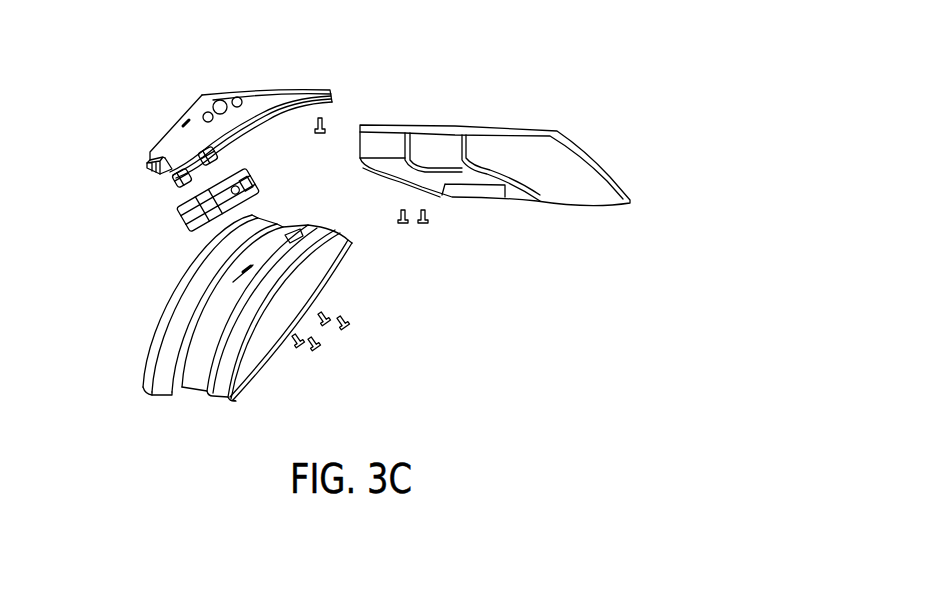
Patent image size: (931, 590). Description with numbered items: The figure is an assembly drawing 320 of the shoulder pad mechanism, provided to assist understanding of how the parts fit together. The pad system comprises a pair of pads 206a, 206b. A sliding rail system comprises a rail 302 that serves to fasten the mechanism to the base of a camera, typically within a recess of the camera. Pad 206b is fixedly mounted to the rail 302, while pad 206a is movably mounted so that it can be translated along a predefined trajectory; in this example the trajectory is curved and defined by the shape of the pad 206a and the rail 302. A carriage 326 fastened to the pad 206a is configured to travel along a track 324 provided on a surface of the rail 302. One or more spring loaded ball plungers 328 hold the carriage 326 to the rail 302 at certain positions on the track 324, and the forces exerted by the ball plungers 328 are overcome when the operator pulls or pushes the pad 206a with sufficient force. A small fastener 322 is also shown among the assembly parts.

The assembly drawing 320 is at (109, 66).
The rail 302 is at (255, 92).
The screw 322 is at (268, 121).
The spring loaded ball plungers 328 is at (214, 158).
The carriage 326 is at (181, 209).
The track 324 is at (219, 327).
The pad 206a is at (255, 368).
The pad 206b is at (598, 195).